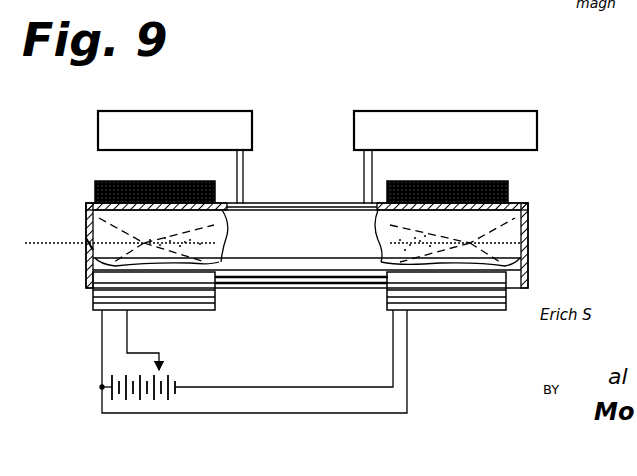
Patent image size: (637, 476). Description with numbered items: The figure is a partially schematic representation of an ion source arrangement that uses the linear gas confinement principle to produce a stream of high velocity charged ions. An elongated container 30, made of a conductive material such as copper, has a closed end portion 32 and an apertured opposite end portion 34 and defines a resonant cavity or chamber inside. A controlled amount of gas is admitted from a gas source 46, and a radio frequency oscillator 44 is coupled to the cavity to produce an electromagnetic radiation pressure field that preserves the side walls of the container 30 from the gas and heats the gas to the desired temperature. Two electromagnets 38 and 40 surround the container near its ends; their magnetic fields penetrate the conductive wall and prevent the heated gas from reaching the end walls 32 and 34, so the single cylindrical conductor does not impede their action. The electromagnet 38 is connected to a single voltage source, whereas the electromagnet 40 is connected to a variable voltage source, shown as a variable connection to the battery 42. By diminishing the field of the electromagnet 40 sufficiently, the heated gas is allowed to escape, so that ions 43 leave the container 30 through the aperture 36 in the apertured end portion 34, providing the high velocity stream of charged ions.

The elongated container 30 is at (328, 212).
The closed end portion 32 is at (528, 243).
The apertured end portion 34 is at (86, 228).
The aperture 36 is at (86, 252).
The electromagnet 38 is at (505, 181).
The electromagnet 40 is at (160, 181).
The battery 42 is at (168, 372).
The ions 43 is at (45, 246).
The radio frequency oscillator 44 is at (445, 113).
The gas source 46 is at (218, 112).